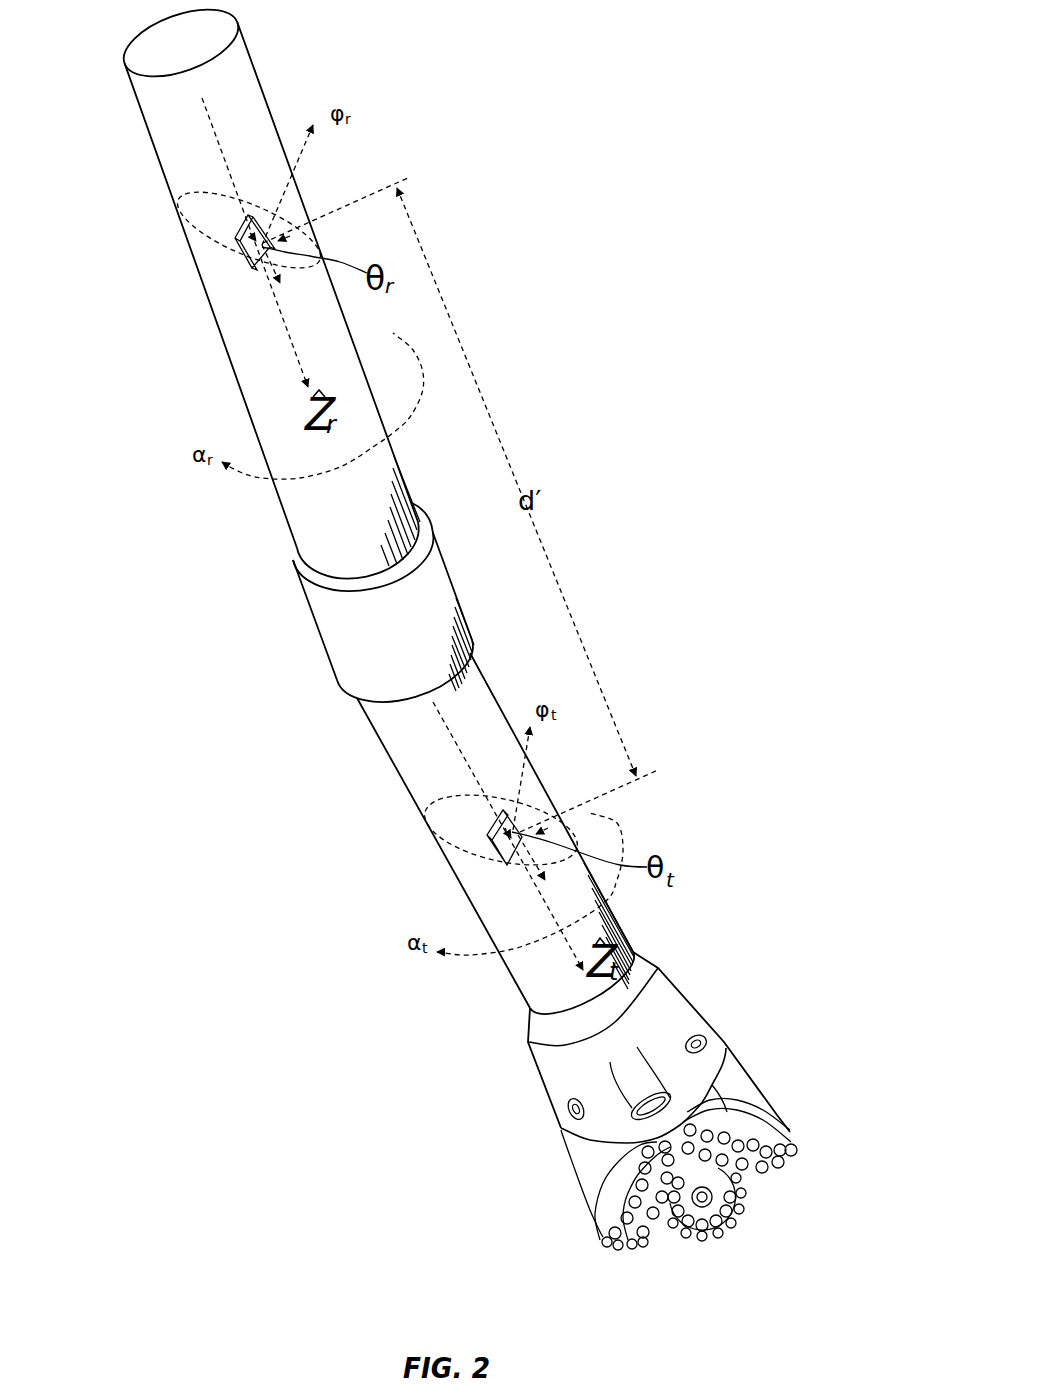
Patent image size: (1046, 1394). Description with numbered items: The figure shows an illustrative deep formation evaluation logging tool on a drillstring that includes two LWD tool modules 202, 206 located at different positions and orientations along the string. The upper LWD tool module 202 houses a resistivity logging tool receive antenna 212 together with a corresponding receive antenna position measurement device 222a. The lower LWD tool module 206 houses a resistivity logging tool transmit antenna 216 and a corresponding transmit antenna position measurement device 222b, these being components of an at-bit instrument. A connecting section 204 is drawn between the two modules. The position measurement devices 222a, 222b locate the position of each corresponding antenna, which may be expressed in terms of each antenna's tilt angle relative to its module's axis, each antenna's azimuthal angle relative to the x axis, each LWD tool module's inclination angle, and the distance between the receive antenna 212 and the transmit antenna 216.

The LWD tool module 202 is at (243, 56).
The resistivity logging tool receive antenna 212 is at (200, 240).
The receive antenna position measurement device 222a is at (245, 262).
The collar / tool joint 204 is at (320, 642).
The LWD tool module 206 is at (487, 673).
The resistivity logging tool transmit antenna 216 is at (505, 863).
The transmit antenna position measurement device 222b is at (502, 860).